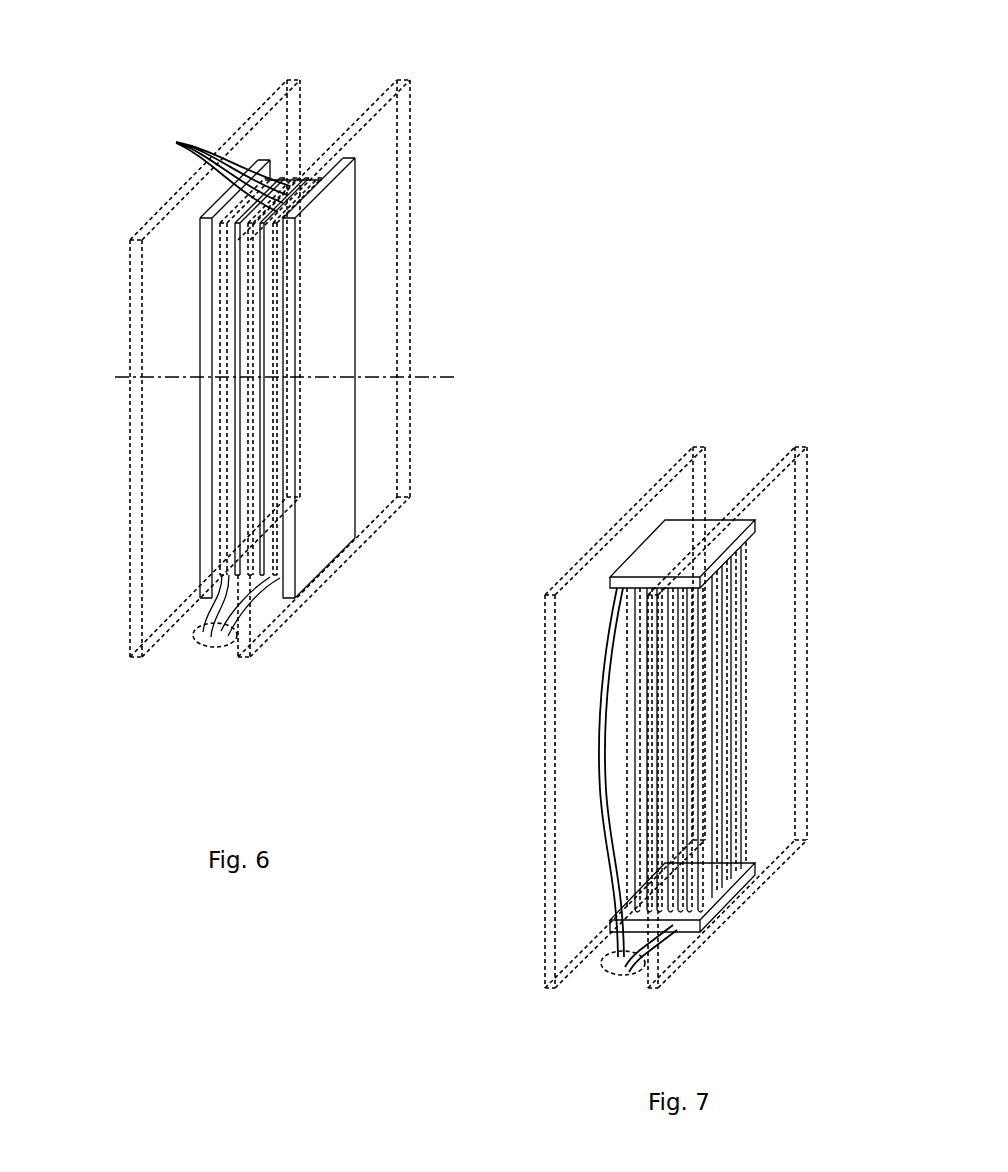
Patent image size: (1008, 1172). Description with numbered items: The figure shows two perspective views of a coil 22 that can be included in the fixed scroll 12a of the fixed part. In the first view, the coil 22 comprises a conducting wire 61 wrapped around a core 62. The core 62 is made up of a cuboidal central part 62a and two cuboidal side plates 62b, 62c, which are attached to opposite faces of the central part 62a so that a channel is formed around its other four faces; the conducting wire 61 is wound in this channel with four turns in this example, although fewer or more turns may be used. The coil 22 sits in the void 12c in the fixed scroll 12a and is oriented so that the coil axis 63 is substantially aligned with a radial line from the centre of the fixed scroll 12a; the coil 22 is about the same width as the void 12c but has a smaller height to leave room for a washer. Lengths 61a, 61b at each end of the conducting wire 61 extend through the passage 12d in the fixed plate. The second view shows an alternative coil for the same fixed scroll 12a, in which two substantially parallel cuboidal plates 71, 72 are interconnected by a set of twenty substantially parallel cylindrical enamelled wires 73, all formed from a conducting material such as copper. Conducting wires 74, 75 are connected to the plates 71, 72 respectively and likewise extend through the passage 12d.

In FIG. 6, the fixed scroll 12a is at (130, 430).
In FIG. 7, the fixed scroll 12a is at (545, 770).
In FIG. 6, the void 12c is at (378, 67).
In FIG. 7, the void 12c is at (748, 443).
In FIG. 6, the passage 12d is at (218, 648).
In FIG. 7, the passage 12d is at (623, 975).
In FIG. 6, the coil 22 is at (380, 212).
In FIG. 7, the coil 22 is at (780, 590).
In FIG. 6, the conducting wire 61 is at (219, 170).
In FIG. 6, the length of conducting wire 61a is at (205, 628).
In FIG. 6, the length of conducting wire 61b is at (253, 608).
In FIG. 6, the core 62 is at (357, 72).
In FIG. 6, the central part 62a is at (222, 442).
In FIG. 6, the side plate 62b is at (337, 542).
In FIG. 6, the side plate 62c is at (203, 507).
In FIG. 6, the coil axis 63 is at (373, 368).
In FIG. 7, the plate 71 is at (652, 548).
In FIG. 7, the plate 72 is at (737, 897).
In FIG. 7, the enamelled wires 73 is at (745, 550).
In FIG. 7, the conducting wire 74 is at (613, 948).
In FIG. 7, the conducting wire 75 is at (658, 938).